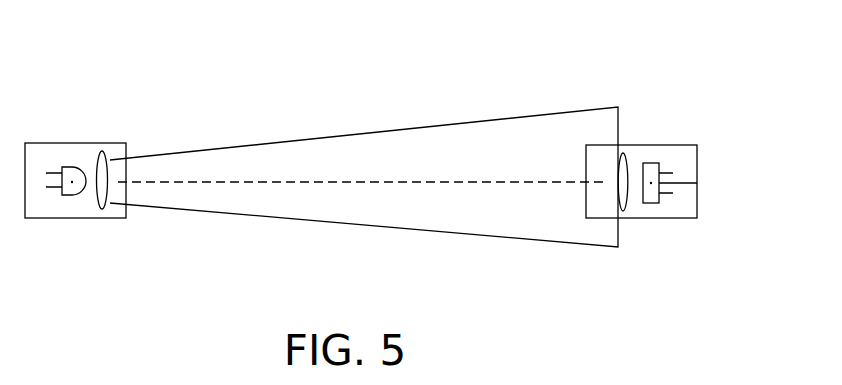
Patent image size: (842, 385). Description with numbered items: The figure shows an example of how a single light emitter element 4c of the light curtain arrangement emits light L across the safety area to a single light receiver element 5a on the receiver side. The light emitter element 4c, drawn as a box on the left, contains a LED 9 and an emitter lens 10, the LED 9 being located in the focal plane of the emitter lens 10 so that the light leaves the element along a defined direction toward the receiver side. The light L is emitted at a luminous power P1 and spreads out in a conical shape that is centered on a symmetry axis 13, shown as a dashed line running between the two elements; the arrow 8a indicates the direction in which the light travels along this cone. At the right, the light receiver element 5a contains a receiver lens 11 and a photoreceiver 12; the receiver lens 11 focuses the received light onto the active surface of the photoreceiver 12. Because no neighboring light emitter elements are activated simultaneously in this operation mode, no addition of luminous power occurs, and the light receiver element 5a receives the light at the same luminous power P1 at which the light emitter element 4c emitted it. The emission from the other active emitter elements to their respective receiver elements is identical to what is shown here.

The light emitter element 4c is at (77, 218).
The LED 9 is at (72, 168).
The emitter lens 10 is at (98, 148).
The symmetry axis 13 is at (193, 182).
The light beam direction 8a is at (440, 201).
The light L is at (475, 120).
The light receiver element 5a is at (668, 218).
The receiver lens 11 is at (623, 153).
The photoreceiver 12 is at (697, 183).